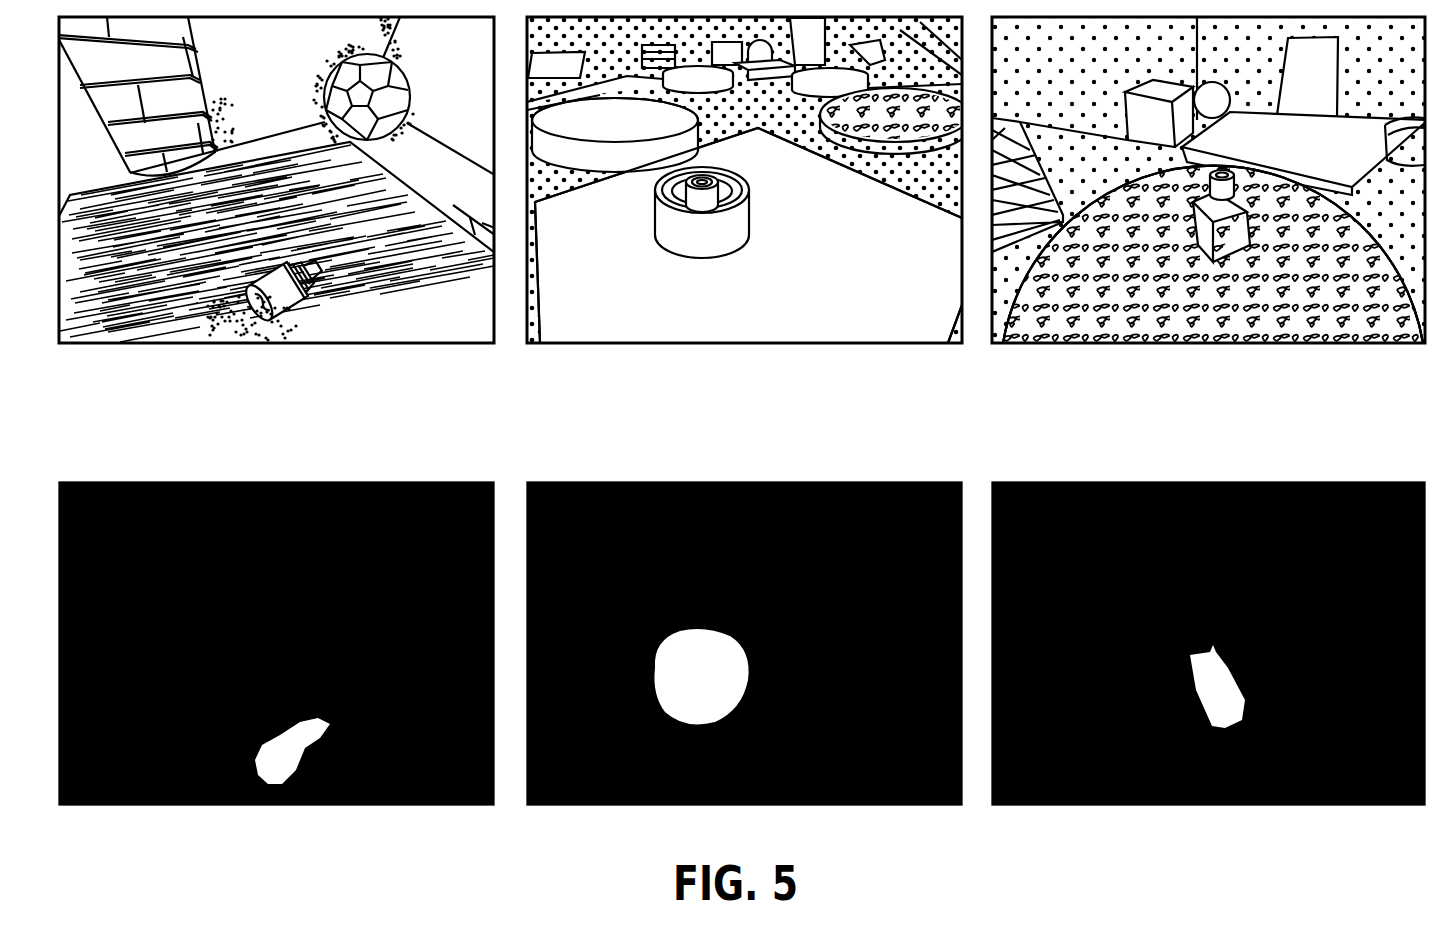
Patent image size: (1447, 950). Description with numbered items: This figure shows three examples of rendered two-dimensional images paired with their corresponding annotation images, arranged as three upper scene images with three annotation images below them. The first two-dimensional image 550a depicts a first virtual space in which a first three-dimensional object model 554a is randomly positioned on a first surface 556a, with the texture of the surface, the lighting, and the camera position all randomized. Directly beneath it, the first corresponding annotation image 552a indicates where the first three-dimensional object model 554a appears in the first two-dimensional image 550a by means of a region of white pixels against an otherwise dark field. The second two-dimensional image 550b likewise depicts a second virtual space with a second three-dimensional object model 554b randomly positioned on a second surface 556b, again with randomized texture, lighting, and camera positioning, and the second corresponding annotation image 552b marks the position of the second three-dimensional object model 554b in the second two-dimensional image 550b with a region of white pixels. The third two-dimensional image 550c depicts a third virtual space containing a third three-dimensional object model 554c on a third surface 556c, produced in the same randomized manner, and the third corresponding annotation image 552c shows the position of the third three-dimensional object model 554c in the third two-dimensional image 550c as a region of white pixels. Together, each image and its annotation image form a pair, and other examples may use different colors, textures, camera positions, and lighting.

The first 2D image 550a is at (276, 212).
The first corresponding annotation image 552a is at (120, 483).
The first 3D object model 554a is at (307, 302).
The first surface 556a is at (412, 326).
The second 2D image 550b is at (748, 212).
The second corresponding annotation image 552b is at (586, 483).
The second 3D object model 554b is at (716, 258).
The second surface 556b is at (826, 326).
The third 2D image 550c is at (1210, 212).
The third corresponding annotation image 552c is at (1035, 483).
The third 3D object model 554c is at (1244, 262).
The third surface 556c is at (1347, 326).